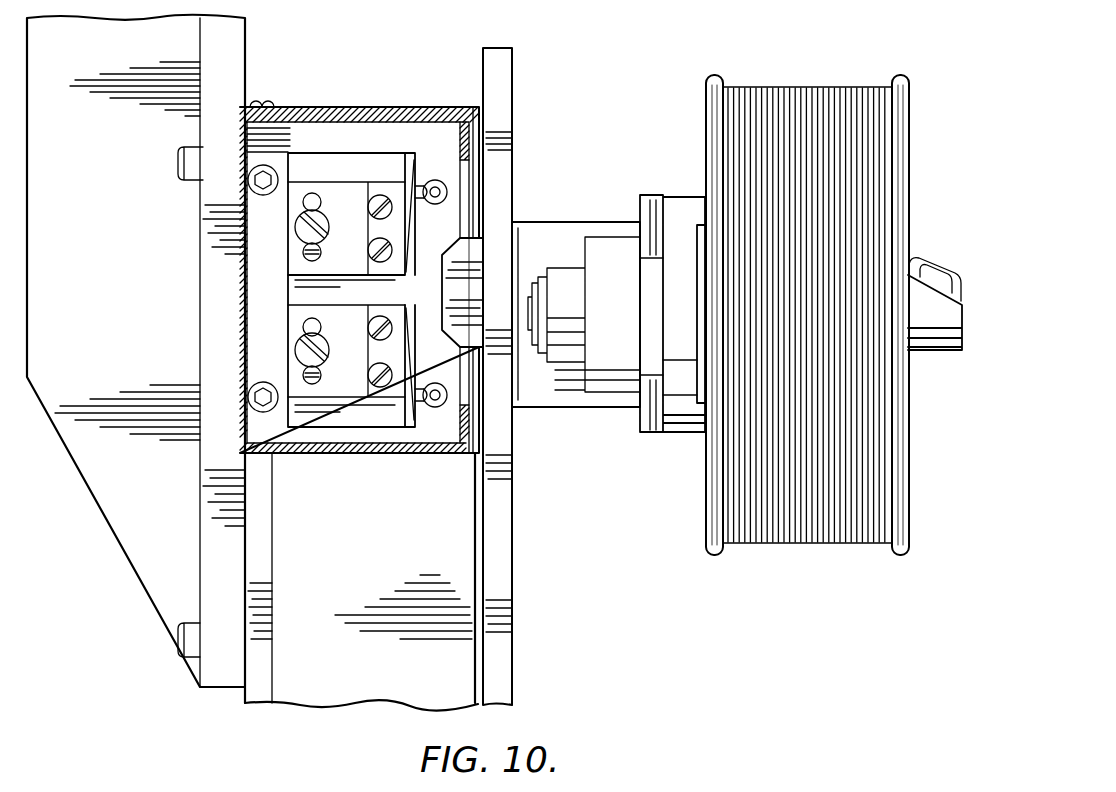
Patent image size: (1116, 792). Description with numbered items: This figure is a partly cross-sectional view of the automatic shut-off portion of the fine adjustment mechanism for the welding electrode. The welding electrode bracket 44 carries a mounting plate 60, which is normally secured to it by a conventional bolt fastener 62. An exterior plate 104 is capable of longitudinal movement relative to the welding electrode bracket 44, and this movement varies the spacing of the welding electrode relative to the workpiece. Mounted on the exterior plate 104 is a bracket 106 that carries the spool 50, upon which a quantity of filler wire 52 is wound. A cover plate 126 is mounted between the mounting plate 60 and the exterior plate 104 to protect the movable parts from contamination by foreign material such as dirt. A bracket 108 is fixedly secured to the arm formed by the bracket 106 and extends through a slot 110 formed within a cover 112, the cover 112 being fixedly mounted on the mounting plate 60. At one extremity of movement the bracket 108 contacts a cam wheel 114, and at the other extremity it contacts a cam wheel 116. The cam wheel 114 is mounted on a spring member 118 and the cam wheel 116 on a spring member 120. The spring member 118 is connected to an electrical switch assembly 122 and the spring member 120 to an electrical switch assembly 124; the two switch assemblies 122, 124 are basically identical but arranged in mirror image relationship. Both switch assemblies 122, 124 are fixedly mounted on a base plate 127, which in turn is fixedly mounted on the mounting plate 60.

The welding electrode bracket 44 is at (185, 60).
The bolt fastener 62 is at (178, 170).
The mounting plate 60 is at (252, 690).
The cover plate 126 is at (330, 690).
The exterior plate 104 is at (506, 78).
The cover 112 is at (292, 106).
The base plate 127 is at (262, 290).
The electrical switch assembly 122 is at (338, 200).
The electrical switch assembly 124 is at (345, 385).
The cam wheel 114 is at (437, 180).
The spring member 120 is at (414, 405).
The cam wheel 116 is at (442, 405).
The spring member 118 is at (418, 215).
The slot 110 is at (462, 413).
The bracket 108 is at (477, 325).
The bracket 106 is at (575, 225).
The spool 50 is at (892, 556).
The filler wire 52 is at (795, 545).